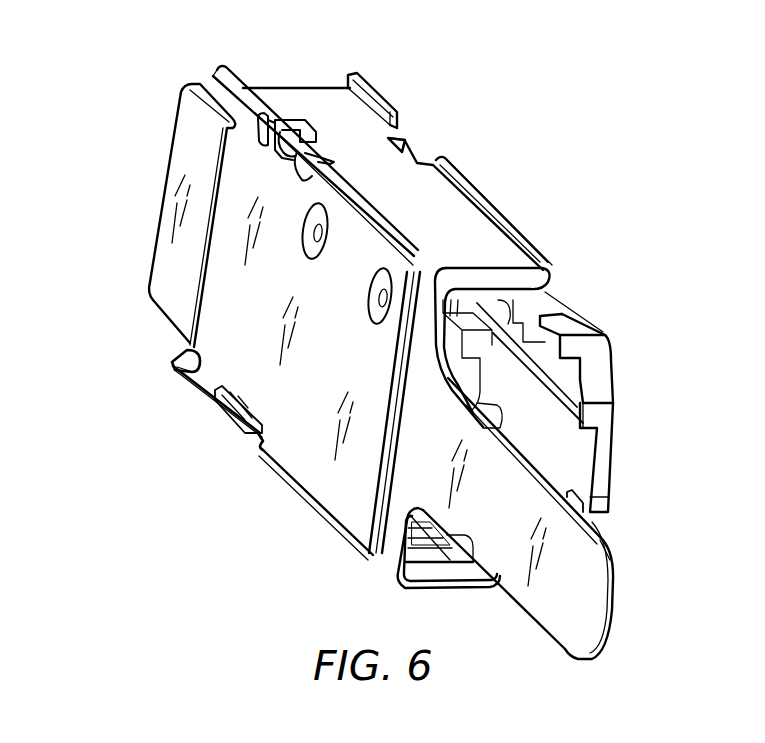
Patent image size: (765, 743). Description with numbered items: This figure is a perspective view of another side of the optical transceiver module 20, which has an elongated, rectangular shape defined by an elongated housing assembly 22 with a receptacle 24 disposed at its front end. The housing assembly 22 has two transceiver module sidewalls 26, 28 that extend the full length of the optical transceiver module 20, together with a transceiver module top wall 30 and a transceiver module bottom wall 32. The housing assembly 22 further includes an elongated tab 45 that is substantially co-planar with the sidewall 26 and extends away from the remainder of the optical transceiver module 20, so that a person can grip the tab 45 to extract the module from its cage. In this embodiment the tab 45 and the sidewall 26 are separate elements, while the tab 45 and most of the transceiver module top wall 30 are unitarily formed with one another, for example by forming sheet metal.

The optical transceiver module 20 is at (122, 145).
The housing assembly 22 is at (303, 87).
The receptacle 24 is at (607, 455).
The transceiver module sidewall 26 is at (271, 470).
The transceiver module sidewall 28 is at (492, 208).
The transceiver module top wall 30 is at (398, 170).
The transceiver module bottom wall 32 is at (428, 588).
The elongated tab 45 is at (537, 622).